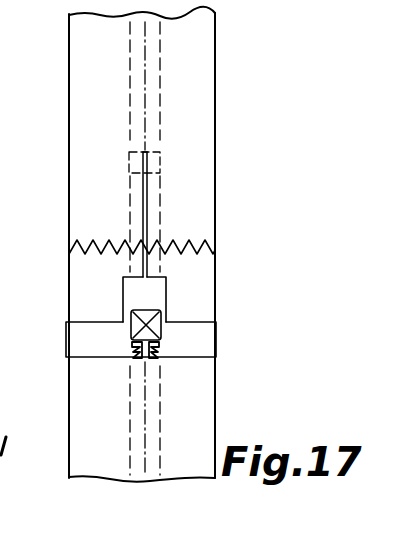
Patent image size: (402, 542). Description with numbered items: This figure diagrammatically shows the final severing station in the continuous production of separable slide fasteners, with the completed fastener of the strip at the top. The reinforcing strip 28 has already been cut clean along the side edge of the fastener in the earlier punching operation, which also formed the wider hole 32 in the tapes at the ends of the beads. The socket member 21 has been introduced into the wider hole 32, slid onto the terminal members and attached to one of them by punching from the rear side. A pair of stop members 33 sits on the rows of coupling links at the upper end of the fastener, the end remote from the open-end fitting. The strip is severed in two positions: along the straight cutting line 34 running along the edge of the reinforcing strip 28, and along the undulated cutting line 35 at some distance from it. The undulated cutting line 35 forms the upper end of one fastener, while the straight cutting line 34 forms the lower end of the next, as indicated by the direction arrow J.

The socket member 21 is at (162, 338).
The reinforcing strip 28 is at (73, 340).
The wider hole 32 is at (158, 296).
The stop members 33 is at (159, 168).
The straight cutting line 34 is at (185, 322).
The undulated cutting line 35 is at (197, 244).
The direction arrow J is at (243, 327).